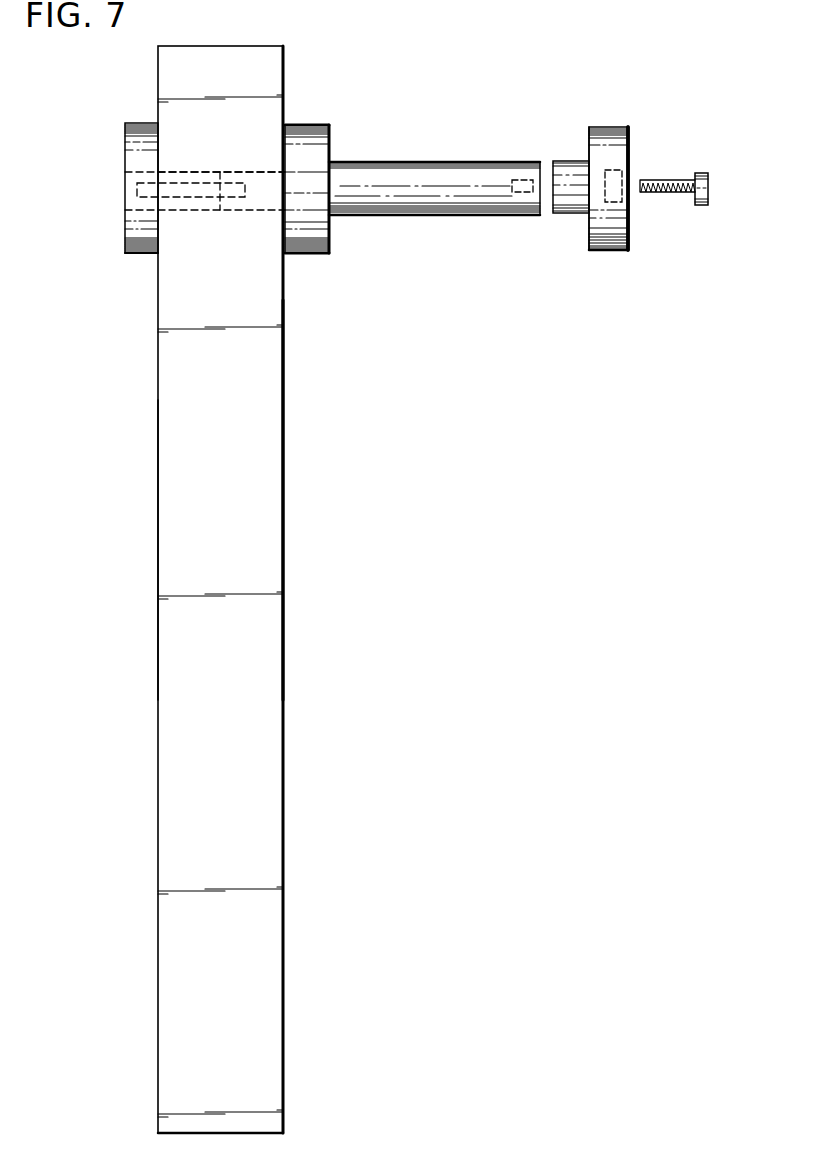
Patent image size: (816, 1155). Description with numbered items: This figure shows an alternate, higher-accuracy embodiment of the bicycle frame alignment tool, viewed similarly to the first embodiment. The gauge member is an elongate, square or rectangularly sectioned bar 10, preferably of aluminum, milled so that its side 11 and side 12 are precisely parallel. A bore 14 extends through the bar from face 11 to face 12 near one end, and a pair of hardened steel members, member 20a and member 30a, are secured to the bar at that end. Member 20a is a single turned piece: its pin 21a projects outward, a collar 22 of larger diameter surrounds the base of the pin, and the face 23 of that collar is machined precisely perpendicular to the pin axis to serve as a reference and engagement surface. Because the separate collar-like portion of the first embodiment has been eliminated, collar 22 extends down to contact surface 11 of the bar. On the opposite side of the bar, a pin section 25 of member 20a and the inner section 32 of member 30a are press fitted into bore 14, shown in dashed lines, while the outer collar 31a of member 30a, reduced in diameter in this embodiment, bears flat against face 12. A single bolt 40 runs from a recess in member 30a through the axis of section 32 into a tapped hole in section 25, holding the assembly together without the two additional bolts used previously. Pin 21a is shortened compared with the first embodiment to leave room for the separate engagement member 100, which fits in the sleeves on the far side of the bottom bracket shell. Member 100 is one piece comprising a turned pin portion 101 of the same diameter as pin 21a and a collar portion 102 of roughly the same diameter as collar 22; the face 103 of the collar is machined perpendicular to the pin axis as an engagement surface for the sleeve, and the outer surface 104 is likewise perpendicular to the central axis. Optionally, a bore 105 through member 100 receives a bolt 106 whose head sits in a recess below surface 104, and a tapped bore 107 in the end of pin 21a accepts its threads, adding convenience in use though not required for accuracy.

The bar 10 is at (224, 506).
The side 11 is at (283, 508).
The side 12 is at (158, 553).
The bore 14 is at (268, 210).
The member 20a is at (380, 113).
The pin 21a is at (443, 216).
The collar 22 is at (300, 125).
The face 23 is at (329, 149).
The pin section 25 is at (270, 171).
The member 30a is at (126, 105).
The collar 31a is at (139, 254).
The inner section 32 is at (203, 170).
The bolt 40 is at (125, 188).
The engagement member 100 is at (608, 113).
The pin portion 101 is at (567, 161).
The collar portion 102 is at (618, 252).
The face 103 is at (589, 237).
The outer surface 104 is at (628, 232).
The bore 105 is at (615, 170).
The bolt 106 is at (685, 178).
The tapped bore 107 is at (533, 220).